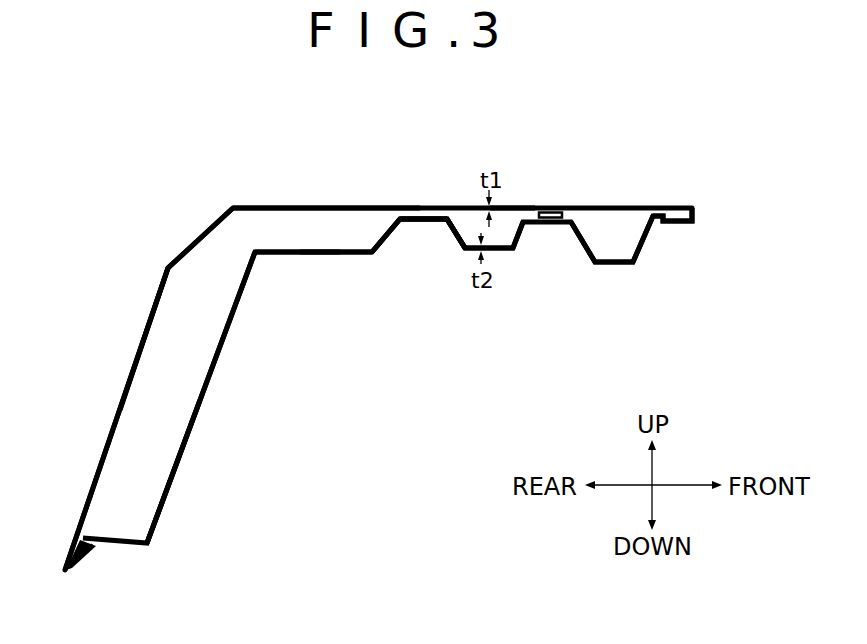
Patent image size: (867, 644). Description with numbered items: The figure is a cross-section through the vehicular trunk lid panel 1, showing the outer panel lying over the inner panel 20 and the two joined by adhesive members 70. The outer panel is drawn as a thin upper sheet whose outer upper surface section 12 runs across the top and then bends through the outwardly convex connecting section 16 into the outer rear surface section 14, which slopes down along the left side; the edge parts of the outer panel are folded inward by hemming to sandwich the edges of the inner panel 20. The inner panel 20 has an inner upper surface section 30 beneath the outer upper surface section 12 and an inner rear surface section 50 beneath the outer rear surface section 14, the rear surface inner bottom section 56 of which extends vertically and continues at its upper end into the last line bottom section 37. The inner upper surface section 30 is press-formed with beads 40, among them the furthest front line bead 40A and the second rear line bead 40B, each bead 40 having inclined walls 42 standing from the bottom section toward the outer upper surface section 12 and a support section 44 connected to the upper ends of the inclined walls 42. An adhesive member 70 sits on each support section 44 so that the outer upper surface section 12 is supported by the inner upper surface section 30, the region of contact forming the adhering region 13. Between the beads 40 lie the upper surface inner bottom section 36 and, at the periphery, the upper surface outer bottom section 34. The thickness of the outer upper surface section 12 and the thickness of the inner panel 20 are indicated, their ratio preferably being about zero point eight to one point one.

The vehicular trunk lid panel 1 is at (378, 320).
The outer upper surface section 12 is at (248, 205).
The adhering region 13 is at (430, 206).
The outer rear surface section 14 is at (163, 285).
The connecting section 16 is at (200, 238).
The inner panel 20 is at (643, 237).
The inner upper surface section 30 is at (373, 255).
The upper surface outer bottom section 34 is at (620, 262).
The upper surface inner bottom section 36 is at (503, 248).
The last line bottom section 37 is at (324, 252).
The bead 40 is at (407, 108).
The furthest front line bead 40A is at (512, 210).
The second rear line bead 40B is at (449, 206).
The inclined wall 42 is at (383, 233).
The support section 44 is at (418, 207).
The inner rear surface section 50 is at (198, 411).
The rear surface inner bottom section 56 is at (168, 475).
The adhesive member 70 is at (524, 212).